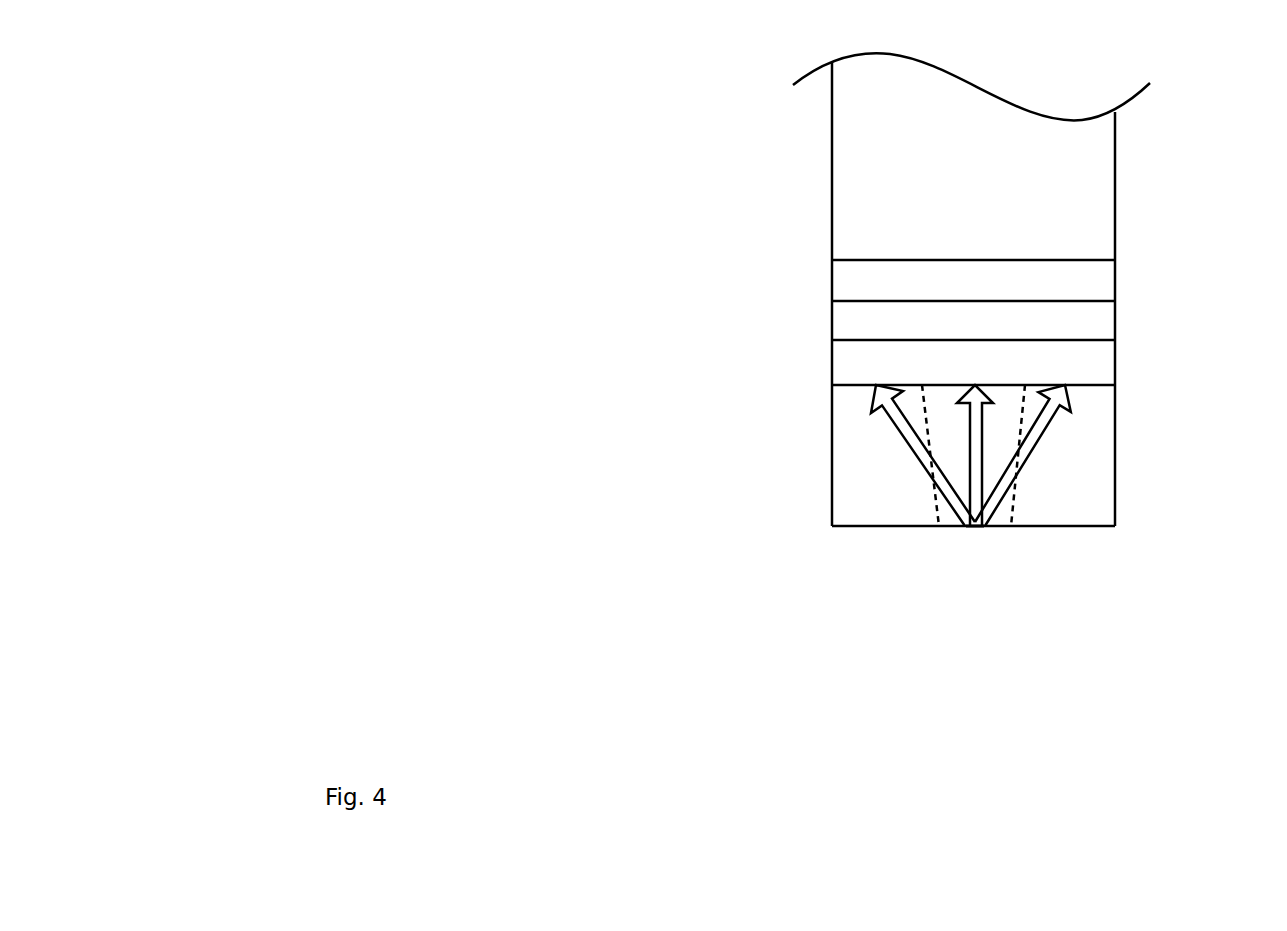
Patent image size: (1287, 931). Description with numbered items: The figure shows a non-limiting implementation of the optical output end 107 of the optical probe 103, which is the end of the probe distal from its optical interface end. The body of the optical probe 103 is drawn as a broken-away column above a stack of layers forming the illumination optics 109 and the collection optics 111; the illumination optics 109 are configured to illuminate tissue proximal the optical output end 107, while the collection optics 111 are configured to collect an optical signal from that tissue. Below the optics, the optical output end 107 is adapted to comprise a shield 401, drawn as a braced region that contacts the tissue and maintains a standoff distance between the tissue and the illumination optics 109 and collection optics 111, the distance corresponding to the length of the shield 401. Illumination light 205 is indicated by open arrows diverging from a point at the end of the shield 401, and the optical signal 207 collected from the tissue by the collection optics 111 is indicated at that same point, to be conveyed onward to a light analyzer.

The optical probe 103 is at (993, 214).
The illumination optics 109 is at (1090, 327).
The collection optics 111 is at (842, 370).
The shield 401 is at (815, 387).
The illumination light 205 is at (1038, 443).
The optical signal 207 is at (972, 527).
The optical output end 107 is at (1083, 553).